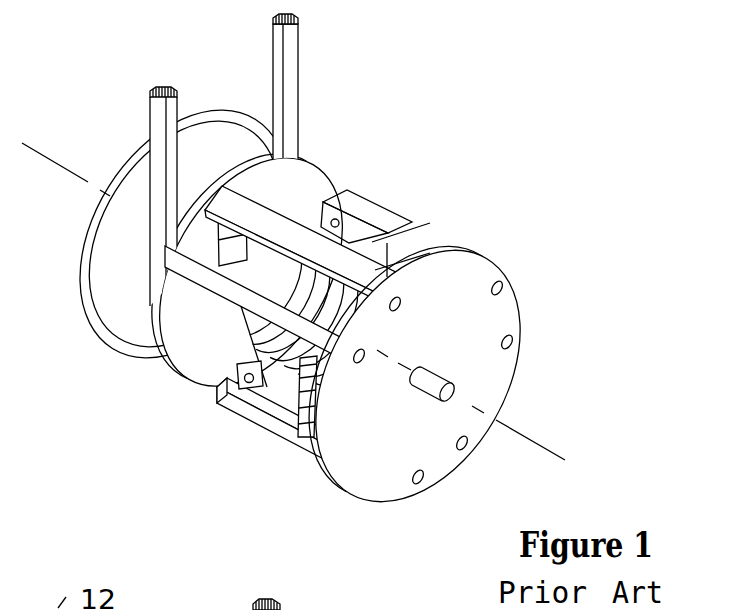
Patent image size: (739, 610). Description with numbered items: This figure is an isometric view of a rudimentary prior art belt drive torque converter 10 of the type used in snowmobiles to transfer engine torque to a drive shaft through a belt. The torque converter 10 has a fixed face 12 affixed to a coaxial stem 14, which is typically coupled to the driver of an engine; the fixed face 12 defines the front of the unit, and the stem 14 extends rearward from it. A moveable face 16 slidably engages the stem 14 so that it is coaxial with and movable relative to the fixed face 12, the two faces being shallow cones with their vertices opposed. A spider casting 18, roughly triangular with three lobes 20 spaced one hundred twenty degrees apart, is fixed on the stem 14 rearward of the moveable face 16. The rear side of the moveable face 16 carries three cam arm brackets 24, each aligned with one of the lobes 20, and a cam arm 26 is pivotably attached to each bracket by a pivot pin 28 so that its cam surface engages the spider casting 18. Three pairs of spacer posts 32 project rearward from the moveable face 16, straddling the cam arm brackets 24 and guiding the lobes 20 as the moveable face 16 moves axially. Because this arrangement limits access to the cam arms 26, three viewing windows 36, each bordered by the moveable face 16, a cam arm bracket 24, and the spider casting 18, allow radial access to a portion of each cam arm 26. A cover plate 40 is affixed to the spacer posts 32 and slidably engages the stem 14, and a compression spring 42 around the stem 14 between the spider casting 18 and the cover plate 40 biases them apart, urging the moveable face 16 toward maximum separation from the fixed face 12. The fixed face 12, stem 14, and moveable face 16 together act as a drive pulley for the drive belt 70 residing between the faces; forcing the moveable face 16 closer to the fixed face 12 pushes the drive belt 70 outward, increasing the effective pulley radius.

The belt drive torque converter 10 is at (432, 127).
The fixed face 12 is at (127, 175).
The stem 14 is at (452, 384).
The moveable face 16 is at (303, 178).
The spider casting 18 is at (395, 228).
The lobes 20 is at (250, 257).
The cam arm brackets 24 is at (196, 252).
The cam arm 26 is at (205, 211).
The pivot pin 28 is at (338, 220).
The spacer posts 32 is at (376, 269).
The viewing windows 36 is at (201, 200).
The cover plate 40 is at (497, 315).
The compression spring 42 is at (300, 327).
The drive belt 70 is at (278, 62).